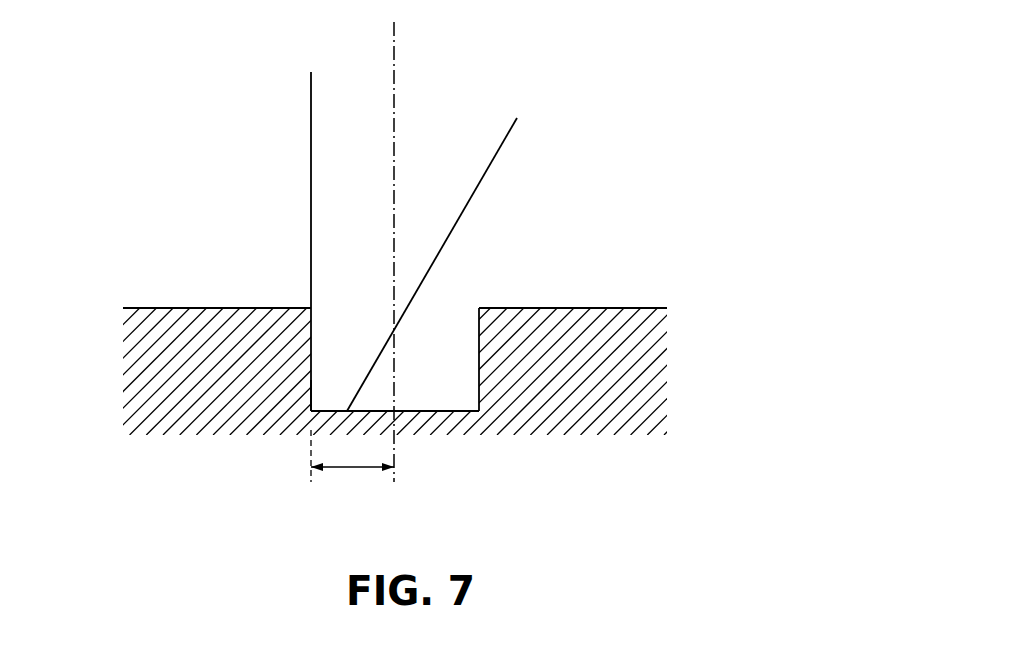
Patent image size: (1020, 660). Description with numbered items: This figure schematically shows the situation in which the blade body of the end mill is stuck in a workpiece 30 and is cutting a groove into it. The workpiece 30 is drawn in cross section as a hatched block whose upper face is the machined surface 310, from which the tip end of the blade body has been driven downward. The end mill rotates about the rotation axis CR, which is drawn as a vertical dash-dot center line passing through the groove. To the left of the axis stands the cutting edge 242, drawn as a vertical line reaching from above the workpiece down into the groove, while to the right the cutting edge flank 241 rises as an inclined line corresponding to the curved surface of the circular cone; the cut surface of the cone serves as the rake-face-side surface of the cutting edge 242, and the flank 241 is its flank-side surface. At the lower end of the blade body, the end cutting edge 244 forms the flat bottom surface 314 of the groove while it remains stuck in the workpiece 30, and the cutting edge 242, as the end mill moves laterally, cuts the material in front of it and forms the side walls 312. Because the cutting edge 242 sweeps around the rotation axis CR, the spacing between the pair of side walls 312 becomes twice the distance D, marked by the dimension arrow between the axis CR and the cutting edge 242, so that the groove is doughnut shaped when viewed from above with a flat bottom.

The workpiece 30 is at (72, 82).
The cutting edge flank 241 is at (498, 153).
The cutting edge 242 is at (311, 163).
The end cutting edge 244 is at (328, 411).
The machined surface 310 is at (628, 308).
The side walls 312 is at (479, 343).
The bottom surface 314 is at (428, 411).
The rotation axis CR is at (396, 241).
The distance between rotation axis and cutting edge D is at (352, 465).